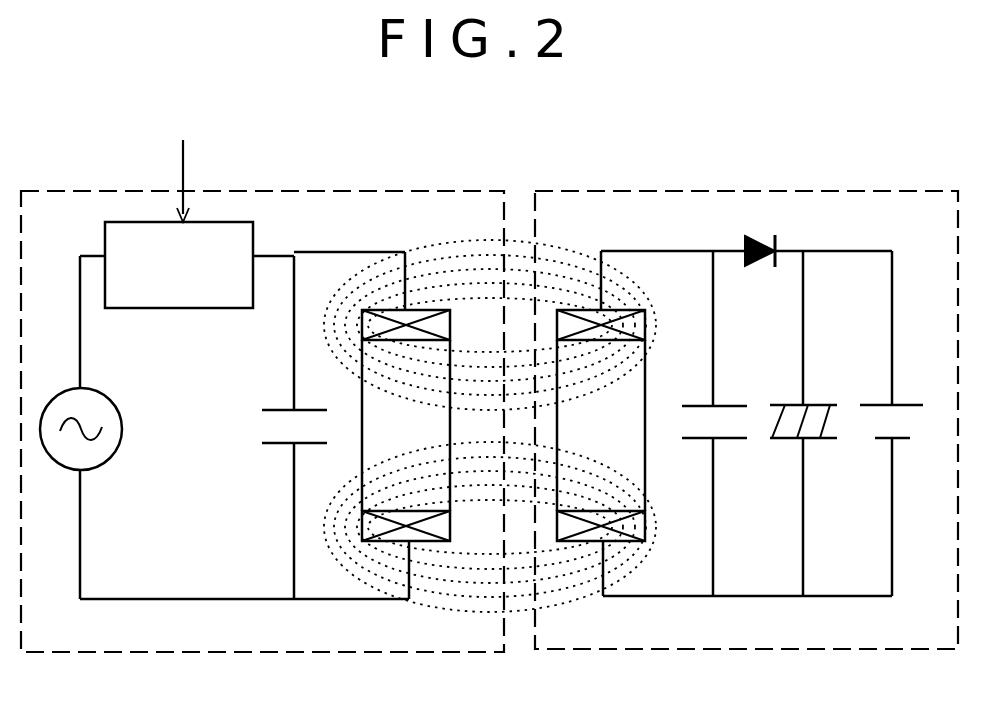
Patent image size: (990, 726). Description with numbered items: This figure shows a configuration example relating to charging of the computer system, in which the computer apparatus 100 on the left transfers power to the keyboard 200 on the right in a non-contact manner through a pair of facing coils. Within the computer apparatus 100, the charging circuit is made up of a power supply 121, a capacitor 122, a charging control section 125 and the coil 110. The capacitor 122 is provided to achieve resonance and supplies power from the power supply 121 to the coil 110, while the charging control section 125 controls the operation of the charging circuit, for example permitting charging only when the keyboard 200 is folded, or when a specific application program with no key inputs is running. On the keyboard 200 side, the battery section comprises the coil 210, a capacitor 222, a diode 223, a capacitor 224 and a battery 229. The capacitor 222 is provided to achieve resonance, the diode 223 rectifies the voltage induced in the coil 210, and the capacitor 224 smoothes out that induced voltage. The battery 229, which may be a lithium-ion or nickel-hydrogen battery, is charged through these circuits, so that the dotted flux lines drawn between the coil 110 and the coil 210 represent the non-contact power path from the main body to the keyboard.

The computer apparatus 100 is at (385, 652).
The coil 110 is at (362, 437).
The power supply 121 is at (109, 460).
The capacitor 122 is at (277, 403).
The charging control section 125 is at (183, 308).
The keyboard 200 is at (620, 649).
The coil 210 is at (645, 432).
The capacitor 222 is at (732, 398).
The diode 223 is at (737, 240).
The capacitor 224 is at (820, 398).
The battery 229 is at (910, 398).